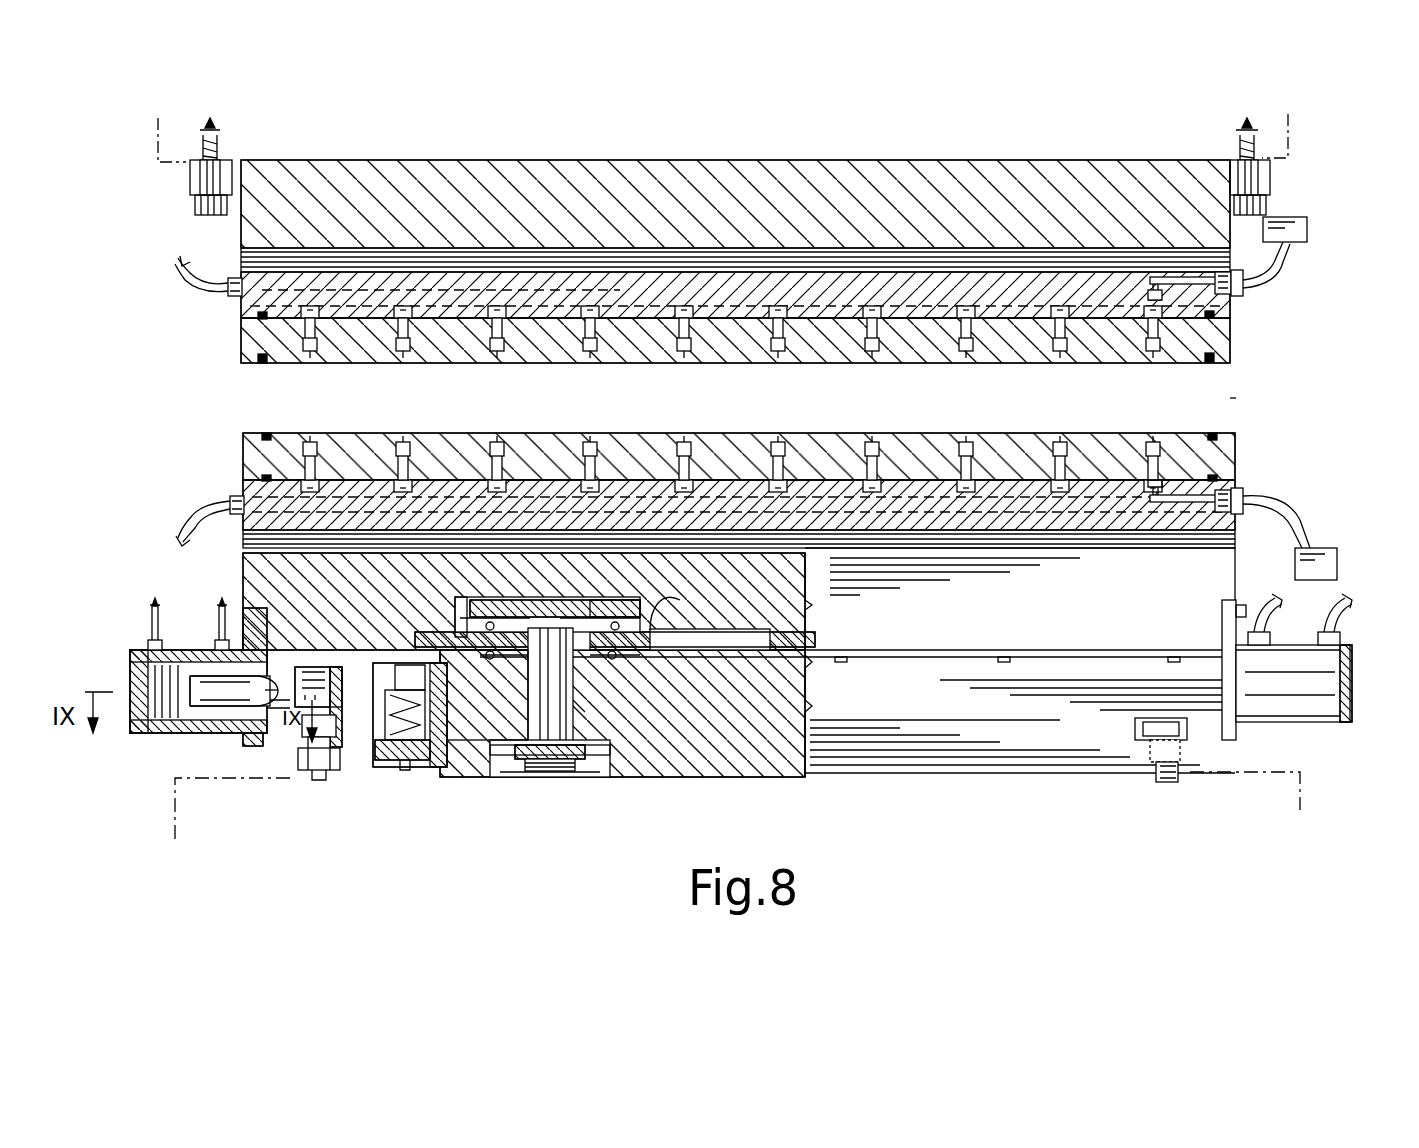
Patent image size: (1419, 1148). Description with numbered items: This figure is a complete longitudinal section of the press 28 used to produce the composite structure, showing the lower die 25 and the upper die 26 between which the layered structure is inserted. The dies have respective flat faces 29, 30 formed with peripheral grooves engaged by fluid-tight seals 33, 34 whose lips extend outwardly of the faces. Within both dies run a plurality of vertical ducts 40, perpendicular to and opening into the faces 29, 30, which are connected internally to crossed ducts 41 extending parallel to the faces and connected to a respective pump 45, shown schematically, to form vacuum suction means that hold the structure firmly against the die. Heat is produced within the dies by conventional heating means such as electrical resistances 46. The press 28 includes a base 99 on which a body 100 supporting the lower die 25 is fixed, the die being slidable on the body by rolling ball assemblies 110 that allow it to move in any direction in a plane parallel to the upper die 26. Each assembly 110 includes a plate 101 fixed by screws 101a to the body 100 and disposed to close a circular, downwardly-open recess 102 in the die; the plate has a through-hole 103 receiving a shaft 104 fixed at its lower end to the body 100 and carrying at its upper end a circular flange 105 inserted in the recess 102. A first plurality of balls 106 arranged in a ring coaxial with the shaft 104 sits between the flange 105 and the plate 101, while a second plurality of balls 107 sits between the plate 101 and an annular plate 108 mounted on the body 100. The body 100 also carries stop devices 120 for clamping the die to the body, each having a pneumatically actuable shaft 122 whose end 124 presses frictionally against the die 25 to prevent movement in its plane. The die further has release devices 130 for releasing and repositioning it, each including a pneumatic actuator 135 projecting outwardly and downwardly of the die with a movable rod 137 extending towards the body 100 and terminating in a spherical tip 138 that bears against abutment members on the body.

The lower die 25 is at (1237, 482).
The upper die 26 is at (1232, 330).
The press 28 is at (1306, 394).
The flat face 29 is at (878, 430).
The flat face 30 is at (815, 365).
The fluid-tight seal 33 is at (268, 432).
The fluid-tight seal 34 is at (262, 366).
The vertical ducts 40 is at (500, 344).
The crossed ducts 41 is at (940, 296).
The pump 45 is at (1300, 230).
The electrical resistances 46 is at (294, 288).
The base 99 is at (1305, 804).
The body 100 is at (990, 760).
The plate 101 is at (678, 657).
The screws 101a is at (668, 642).
The recess 102 is at (442, 623).
The through-hole 103 is at (572, 612).
The shaft 104 is at (580, 772).
The circular flange 105 is at (602, 614).
The first plurality of balls 106 is at (652, 630).
The second plurality of balls 107 is at (625, 652).
The annular plate 108 is at (578, 657).
The rolling ball assembly 110 is at (573, 737).
The stop device 120 is at (490, 748).
The shaft 122 is at (400, 760).
The end 124 is at (457, 737).
The release device 130 is at (292, 751).
The pneumatic actuator 135 is at (200, 650).
The movable rod 137 is at (200, 703).
The spherical tip 138 is at (272, 707).